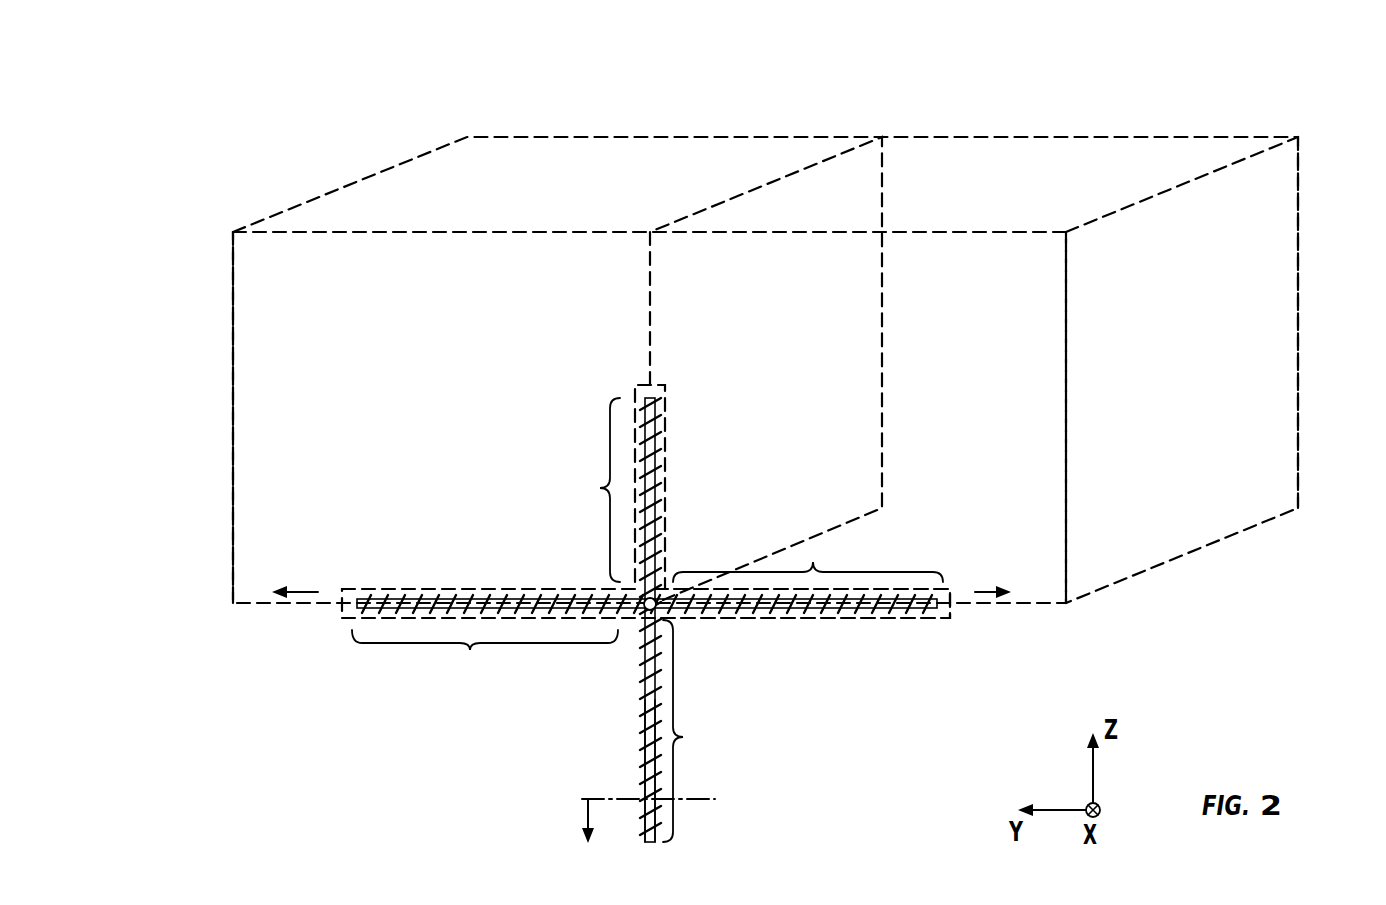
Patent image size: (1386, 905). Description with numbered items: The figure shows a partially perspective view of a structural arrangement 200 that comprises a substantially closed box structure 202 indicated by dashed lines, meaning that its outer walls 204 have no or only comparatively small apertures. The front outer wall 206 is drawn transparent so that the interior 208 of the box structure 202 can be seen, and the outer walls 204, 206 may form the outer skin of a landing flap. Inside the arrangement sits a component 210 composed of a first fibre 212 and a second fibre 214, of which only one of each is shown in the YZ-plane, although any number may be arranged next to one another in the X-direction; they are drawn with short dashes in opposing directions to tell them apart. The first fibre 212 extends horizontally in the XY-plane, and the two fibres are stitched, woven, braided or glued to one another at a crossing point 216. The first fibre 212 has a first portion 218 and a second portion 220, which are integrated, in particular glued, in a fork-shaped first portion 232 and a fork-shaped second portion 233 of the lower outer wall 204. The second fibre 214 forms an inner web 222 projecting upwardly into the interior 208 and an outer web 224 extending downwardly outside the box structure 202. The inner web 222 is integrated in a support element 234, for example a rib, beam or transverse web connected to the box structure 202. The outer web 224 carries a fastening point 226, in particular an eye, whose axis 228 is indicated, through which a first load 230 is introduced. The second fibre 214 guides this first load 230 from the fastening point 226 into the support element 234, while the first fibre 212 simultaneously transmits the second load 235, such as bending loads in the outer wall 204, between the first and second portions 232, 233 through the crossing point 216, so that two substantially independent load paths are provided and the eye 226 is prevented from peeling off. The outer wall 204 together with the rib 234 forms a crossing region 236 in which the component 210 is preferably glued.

The structural arrangement 200 is at (278, 102).
The box structure 202 is at (982, 137).
The outer walls 204 is at (772, 155).
The front outer wall 206 is at (1045, 580).
The interior 208 is at (926, 387).
The component 210 is at (641, 616).
The first fibre 212 is at (400, 610).
The second fibre 214 is at (652, 752).
The crossing point 216 is at (656, 609).
The first portion 218 is at (485, 658).
The second portion 220 is at (808, 553).
The inner web 222 is at (584, 490).
The outer web 224 is at (698, 731).
The fastening point 226 is at (645, 777).
The axis of the eye 228 is at (700, 802).
The first load 230 is at (585, 815).
The first portion of the outer wall 232 is at (415, 590).
The second portion of the outer wall 233 is at (878, 618).
The support element 234 is at (855, 178).
The second load 235 is at (310, 592).
The crossing region 236 is at (618, 650).